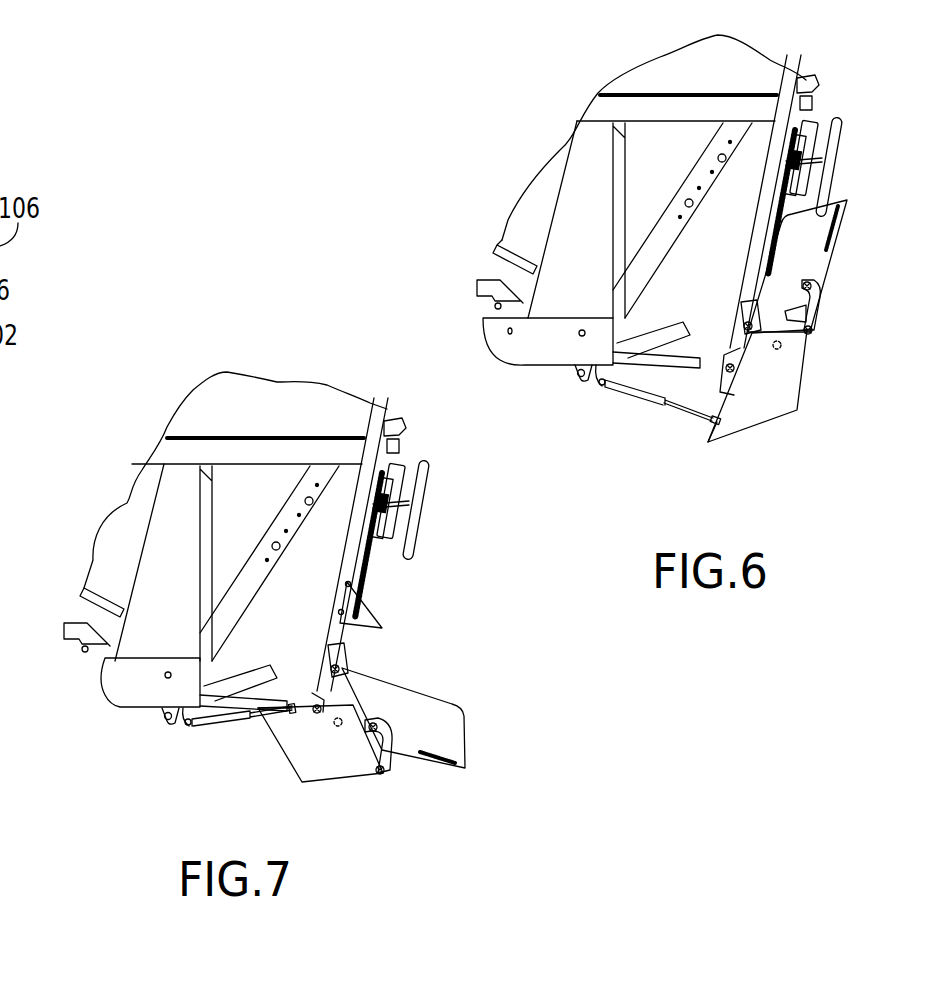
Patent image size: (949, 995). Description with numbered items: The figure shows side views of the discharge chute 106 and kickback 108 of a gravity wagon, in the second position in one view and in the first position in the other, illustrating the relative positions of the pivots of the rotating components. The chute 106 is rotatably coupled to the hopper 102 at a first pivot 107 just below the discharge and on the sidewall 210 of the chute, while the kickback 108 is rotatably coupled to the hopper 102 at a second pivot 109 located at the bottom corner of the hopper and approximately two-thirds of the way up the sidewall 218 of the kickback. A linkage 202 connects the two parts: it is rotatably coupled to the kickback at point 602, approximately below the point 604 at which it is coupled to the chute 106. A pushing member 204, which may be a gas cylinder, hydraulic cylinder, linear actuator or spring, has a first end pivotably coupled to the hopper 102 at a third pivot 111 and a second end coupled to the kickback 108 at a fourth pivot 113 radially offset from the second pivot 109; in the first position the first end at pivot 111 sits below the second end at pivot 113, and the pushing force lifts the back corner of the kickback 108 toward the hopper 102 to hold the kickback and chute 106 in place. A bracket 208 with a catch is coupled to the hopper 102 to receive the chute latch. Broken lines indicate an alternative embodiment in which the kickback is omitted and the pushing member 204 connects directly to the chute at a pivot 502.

In FIG. 6, the hopper 102 is at (530, 192).
In FIG. 7, the hopper 102 is at (107, 522).
In FIG. 6, the discharge chute 106 is at (840, 251).
In FIG. 7, the discharge chute 106 is at (486, 711).
In FIG. 6, the first pivot 107 is at (744, 326).
In FIG. 7, the first pivot 107 is at (330, 667).
In FIG. 6, the kickback 108 is at (820, 354).
In FIG. 7, the kickback 108 is at (409, 773).
In FIG. 6, the second pivot 109 is at (722, 376).
In FIG. 7, the second pivot 109 is at (314, 706).
In FIG. 6, the third pivot 111 is at (594, 383).
In FIG. 7, the third pivot 111 is at (188, 728).
In FIG. 6, the fourth pivot 113 is at (707, 427).
In FIG. 7, the fourth pivot 113 is at (272, 711).
In FIG. 6, the linkage 202 is at (822, 300).
In FIG. 7, the linkage 202 is at (378, 745).
In FIG. 6, the pushing member 204 is at (632, 399).
In FIG. 7, the pushing member 204 is at (234, 728).
In FIG. 7, the bracket 208 is at (343, 608).
In FIG. 6, the sidewall of the chute 210 is at (819, 272).
In FIG. 6, the sidewall of the kickback 218 is at (784, 403).
In FIG. 7, the sidewall of the kickback 218 is at (344, 768).
In FIG. 6, the pivot 502 is at (783, 348).
In FIG. 7, the pivot 502 is at (346, 701).
In FIG. 6, the linkage coupling point on the kickback 602 is at (815, 331).
In FIG. 7, the linkage coupling point on the kickback 602 is at (386, 773).
In FIG. 6, the linkage coupling point on the chute 604 is at (812, 287).
In FIG. 7, the linkage coupling point on the chute 604 is at (378, 722).